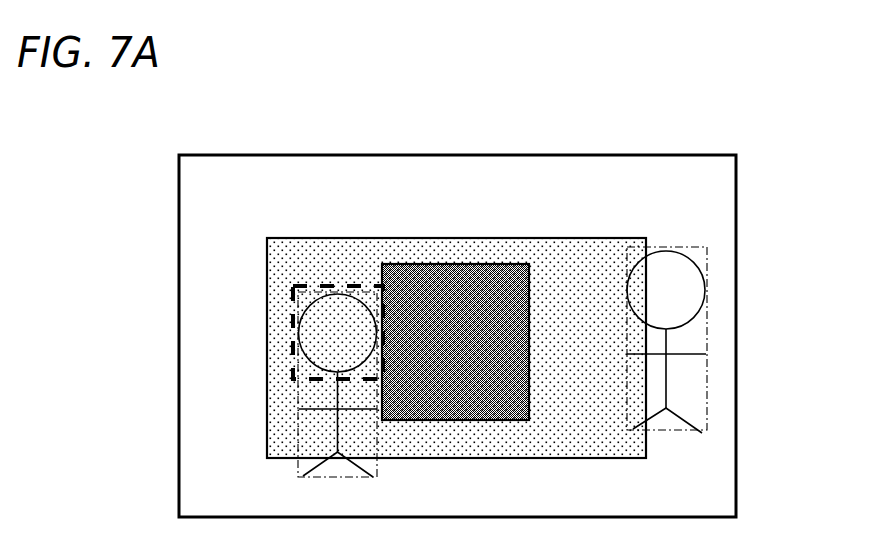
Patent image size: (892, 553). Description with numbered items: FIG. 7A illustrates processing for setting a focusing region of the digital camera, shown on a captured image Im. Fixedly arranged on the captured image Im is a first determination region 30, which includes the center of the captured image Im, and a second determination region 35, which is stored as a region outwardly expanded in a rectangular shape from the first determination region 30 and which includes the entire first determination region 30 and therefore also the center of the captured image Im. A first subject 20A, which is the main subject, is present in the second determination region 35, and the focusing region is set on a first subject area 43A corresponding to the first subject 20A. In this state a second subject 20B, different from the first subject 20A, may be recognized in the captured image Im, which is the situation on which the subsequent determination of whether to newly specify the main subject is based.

The captured image Im is at (238, 208).
The first subject 20A is at (388, 451).
The second subject 20B is at (708, 407).
The first determination region 30 is at (476, 264).
The second determination region 35 is at (267, 365).
The first subject area 43A is at (338, 285).